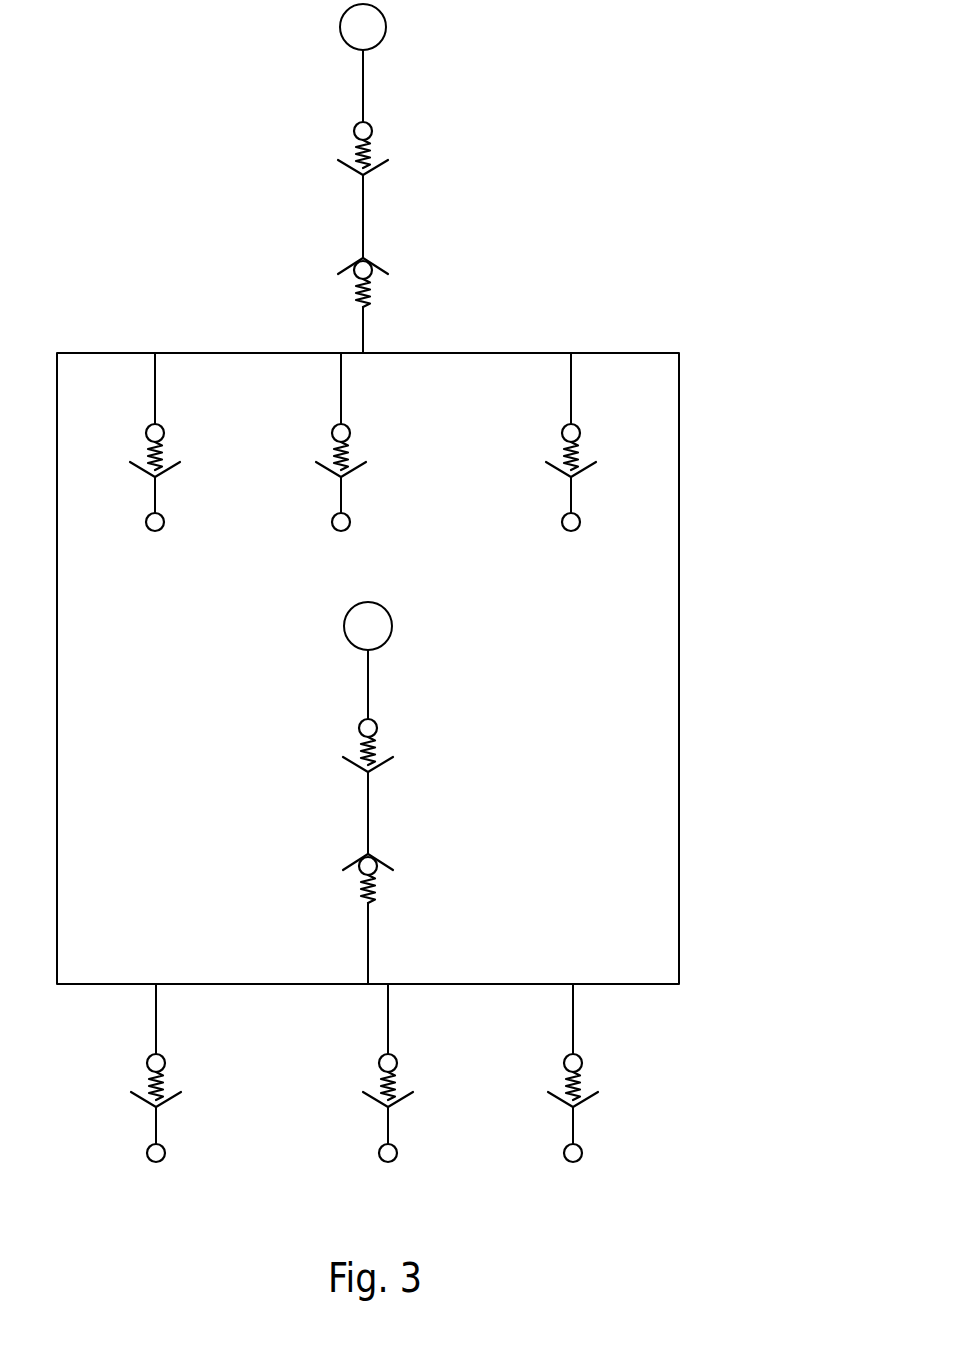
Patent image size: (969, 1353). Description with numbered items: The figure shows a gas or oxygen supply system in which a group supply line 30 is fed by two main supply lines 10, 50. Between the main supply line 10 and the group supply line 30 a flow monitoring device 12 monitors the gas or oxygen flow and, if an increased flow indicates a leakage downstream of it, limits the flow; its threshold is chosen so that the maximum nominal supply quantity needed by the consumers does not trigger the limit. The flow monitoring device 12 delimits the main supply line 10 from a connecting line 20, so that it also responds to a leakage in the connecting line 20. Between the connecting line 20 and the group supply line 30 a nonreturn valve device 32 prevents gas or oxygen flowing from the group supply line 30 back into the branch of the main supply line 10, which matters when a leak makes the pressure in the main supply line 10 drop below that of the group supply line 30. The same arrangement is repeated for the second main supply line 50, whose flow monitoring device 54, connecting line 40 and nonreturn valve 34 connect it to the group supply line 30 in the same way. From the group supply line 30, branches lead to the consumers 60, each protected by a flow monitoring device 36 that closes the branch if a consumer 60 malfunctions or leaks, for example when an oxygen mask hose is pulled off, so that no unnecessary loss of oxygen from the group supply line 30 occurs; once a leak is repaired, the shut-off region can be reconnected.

The main supply line 10 is at (386, 28).
The flow monitoring device 12 is at (371, 143).
The connecting line 20 is at (364, 211).
The nonreturn valve device 32 is at (370, 293).
The group supply line 30 is at (680, 393).
The flow monitoring device 36 is at (162, 450).
The consumer 60 is at (349, 526).
The second main supply line 50 is at (392, 624).
The flow monitoring device 54 is at (375, 741).
The connecting line 40 is at (369, 815).
The nonreturn valve 34 is at (375, 890).